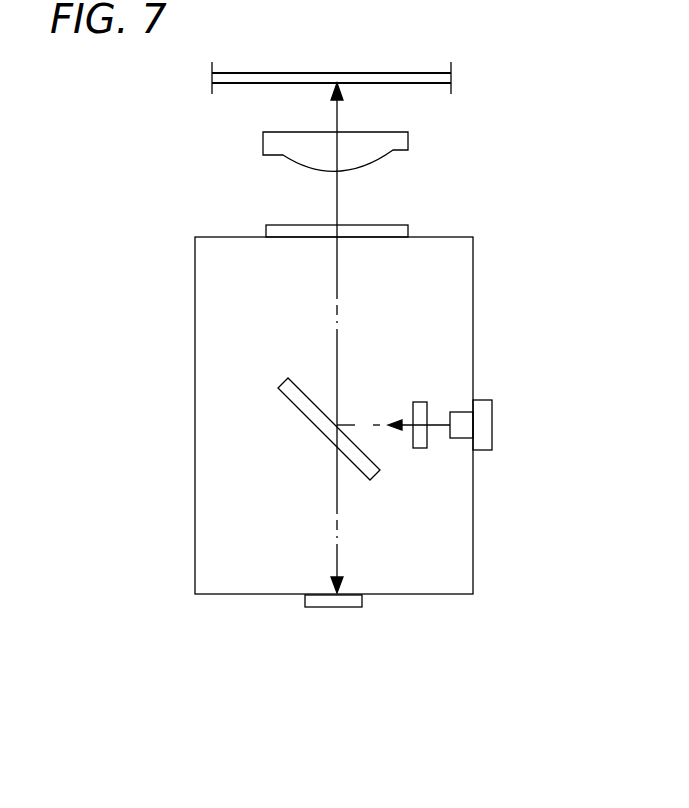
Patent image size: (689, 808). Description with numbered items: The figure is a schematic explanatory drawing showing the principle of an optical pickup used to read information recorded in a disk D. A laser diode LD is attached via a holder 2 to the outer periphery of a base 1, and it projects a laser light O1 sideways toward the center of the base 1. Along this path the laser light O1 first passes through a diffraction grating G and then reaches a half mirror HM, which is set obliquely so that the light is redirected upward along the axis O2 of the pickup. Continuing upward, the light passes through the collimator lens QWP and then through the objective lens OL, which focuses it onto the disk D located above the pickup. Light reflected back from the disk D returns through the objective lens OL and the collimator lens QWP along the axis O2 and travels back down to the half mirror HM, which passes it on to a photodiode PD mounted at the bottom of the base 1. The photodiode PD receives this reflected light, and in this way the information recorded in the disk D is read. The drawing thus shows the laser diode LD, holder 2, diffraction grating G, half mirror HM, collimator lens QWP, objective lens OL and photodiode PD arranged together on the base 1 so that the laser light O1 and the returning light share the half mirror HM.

The disk D is at (451, 78).
The objective lens OL is at (408, 142).
The optical axis of objective lens O2 is at (334, 197).
The collimator lens QWP is at (408, 232).
The base 1 is at (195, 413).
The half mirror HM is at (312, 412).
The laser light O1 is at (435, 425).
The diffraction grating G is at (418, 448).
The laser diode LD is at (457, 436).
The holder 2 is at (492, 425).
The photodiode PD is at (337, 607).